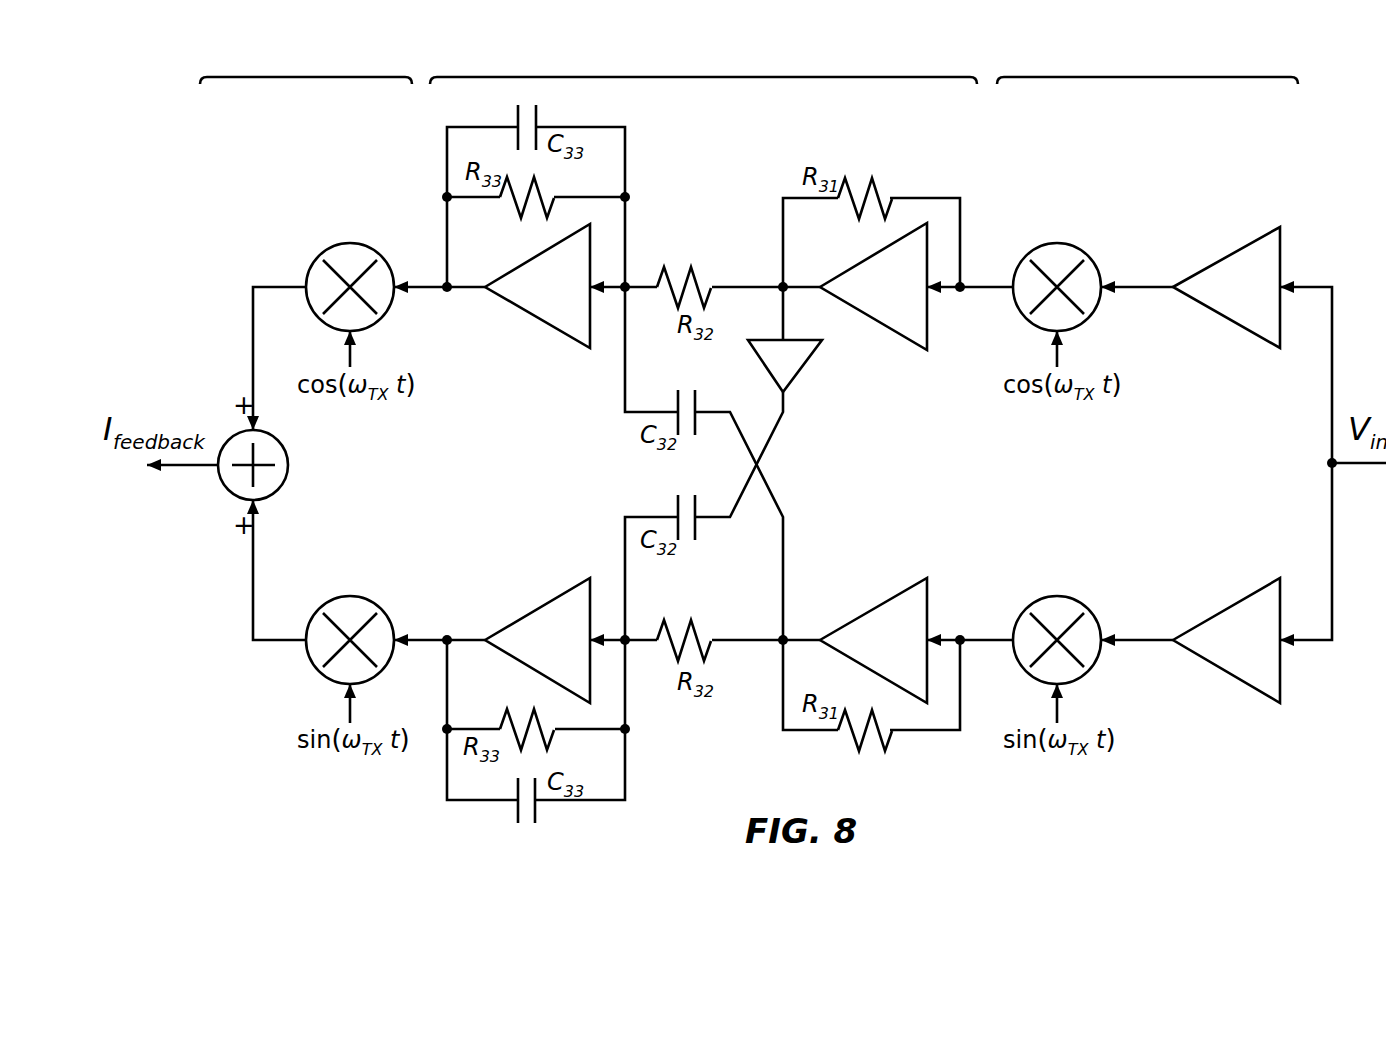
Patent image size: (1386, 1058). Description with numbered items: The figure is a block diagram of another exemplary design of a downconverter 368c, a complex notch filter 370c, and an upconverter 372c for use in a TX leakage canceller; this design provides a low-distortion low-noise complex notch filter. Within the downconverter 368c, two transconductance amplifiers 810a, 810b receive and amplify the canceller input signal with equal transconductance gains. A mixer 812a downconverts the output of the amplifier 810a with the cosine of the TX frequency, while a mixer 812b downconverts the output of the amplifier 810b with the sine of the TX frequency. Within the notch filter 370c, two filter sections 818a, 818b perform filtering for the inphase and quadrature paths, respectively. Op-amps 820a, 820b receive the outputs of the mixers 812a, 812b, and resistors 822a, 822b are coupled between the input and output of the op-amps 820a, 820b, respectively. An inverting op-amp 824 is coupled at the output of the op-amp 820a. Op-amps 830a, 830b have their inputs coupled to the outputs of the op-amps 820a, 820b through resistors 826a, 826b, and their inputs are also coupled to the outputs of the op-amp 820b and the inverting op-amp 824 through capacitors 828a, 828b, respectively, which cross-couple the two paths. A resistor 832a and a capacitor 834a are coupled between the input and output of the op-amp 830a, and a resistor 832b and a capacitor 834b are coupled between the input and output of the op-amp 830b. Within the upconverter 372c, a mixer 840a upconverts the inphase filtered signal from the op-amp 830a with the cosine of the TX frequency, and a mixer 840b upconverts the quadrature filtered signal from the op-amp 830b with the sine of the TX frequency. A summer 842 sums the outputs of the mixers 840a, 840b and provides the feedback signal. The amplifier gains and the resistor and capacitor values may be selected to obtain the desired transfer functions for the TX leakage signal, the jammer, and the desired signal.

The upconverter 372c is at (311, 64).
The complex notch filter 370c is at (703, 64).
The downconverter 368c is at (1147, 64).
The transconductance amplifier 810a is at (1226, 258).
The transconductance amplifier 810b is at (1226, 613).
The mixer 812a is at (1048, 242).
The mixer 812b is at (1048, 595).
The filter section 818a is at (1002, 146).
The filter section 818b is at (1002, 521).
The op-amp 820a is at (872, 323).
The op-amp 820b is at (872, 605).
The resistor 822a is at (880, 182).
The resistor 822b is at (870, 750).
The inverting op-amp 824 is at (796, 373).
The resistor 826a is at (701, 269).
The resistor 826b is at (701, 624).
The capacitor 828a is at (701, 392).
The capacitor 828b is at (701, 499).
The op-amp 830a is at (541, 324).
The op-amp 830b is at (538, 603).
The resistor 832a is at (509, 214).
The resistor 832b is at (511, 715).
The capacitor 834a is at (517, 114).
The capacitor 834b is at (517, 812).
The mixer 840a is at (344, 243).
The mixer 840b is at (344, 598).
The summer 842 is at (288, 464).